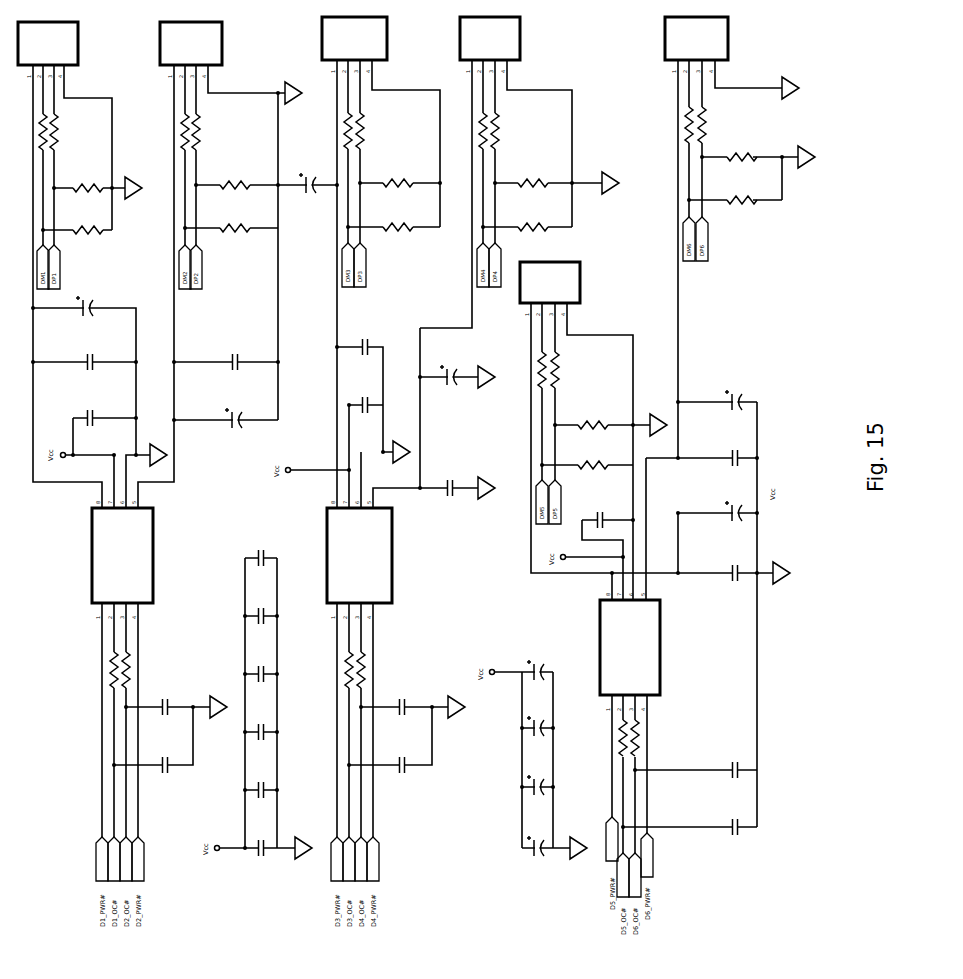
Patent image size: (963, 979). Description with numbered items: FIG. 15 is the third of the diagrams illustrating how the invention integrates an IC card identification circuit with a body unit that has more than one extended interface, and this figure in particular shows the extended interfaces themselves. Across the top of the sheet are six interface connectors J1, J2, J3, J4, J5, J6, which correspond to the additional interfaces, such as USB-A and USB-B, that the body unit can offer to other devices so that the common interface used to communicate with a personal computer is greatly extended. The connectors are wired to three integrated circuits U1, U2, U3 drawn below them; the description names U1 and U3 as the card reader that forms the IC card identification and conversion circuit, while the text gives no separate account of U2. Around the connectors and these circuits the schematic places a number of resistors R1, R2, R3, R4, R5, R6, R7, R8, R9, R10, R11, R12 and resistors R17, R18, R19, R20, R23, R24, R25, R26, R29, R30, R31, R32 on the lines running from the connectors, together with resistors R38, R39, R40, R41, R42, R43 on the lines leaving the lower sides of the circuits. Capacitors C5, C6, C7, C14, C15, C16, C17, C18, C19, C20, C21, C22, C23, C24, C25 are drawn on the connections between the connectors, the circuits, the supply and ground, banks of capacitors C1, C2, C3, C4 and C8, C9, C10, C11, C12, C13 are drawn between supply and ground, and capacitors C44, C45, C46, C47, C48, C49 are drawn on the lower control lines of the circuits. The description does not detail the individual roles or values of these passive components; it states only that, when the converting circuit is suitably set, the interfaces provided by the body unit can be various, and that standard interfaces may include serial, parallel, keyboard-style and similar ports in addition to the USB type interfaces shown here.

The USB-A connector J1 is at (51, 43).
The USB-B connector J2 is at (193, 43).
The USB-A connector J3 is at (354, 39).
The USB-A connector J4 is at (492, 39).
The USB-A connector J5 is at (552, 283).
The USB-A connector J6 is at (695, 39).
The card reader U1 is at (113, 556).
The MIC2526-2BM power switch U2 is at (350, 556).
The card reader U3 is at (620, 648).
The resistor R1 15K R1 is at (88, 222).
The resistor R2 15K R2 is at (88, 179).
The resistor R3 15K R3 is at (235, 220).
The resistor R4 15K R4 is at (235, 177).
The resistor R5 15K R5 is at (398, 218).
The resistor R6 15K R6 is at (398, 175).
The resistor R7 15K R7 is at (593, 457).
The resistor R8 15K R8 is at (593, 417).
The resistor R9 15K R9 is at (742, 214).
The resistor R10 15K R10 is at (742, 171).
The resistor R11 15K R11 is at (533, 217).
The resistor R12 15K R12 is at (533, 173).
The resistor R17 27 R17 is at (28, 132).
The resistor R18 27 R18 is at (467, 131).
The resistor R19 27 R19 is at (69, 132).
The resistor R20 27 R20 is at (509, 131).
The resistor R23 27 R23 is at (169, 132).
The resistor R24 27 R24 is at (528, 370).
The resistor R25 27 R25 is at (210, 132).
The resistor R26 27 R26 is at (568, 370).
The resistor R29 27 R29 is at (331, 131).
The resistor R30 27 R30 is at (674, 125).
The resistor R31 27 R31 is at (374, 131).
The resistor R32 27 R32 is at (715, 125).
The resistor R38 1K R38 is at (99, 670).
The resistor R39 1K R39 is at (142, 670).
The resistor R40 1K R40 is at (334, 670).
The resistor R41 1K R41 is at (377, 670).
The resistor R42 1K R42 is at (609, 738).
The resistor R43 1K R43 is at (653, 738).
The capacitor C1 10uF C1 is at (537, 837).
The capacitor C2 10uF C2 is at (537, 776).
The capacitor C3 10uF C3 is at (537, 717).
The capacitor C4 10uF C4 is at (537, 661).
The capacitor C5 120uF C5 is at (89, 296).
The capacitor C6 0.1uF C6 is at (95, 406).
The capacitor C7 0.1uF C7 is at (95, 350).
The capacitor C8 0.1uF C8 is at (262, 837).
The capacitor C9 0.1uF C9 is at (262, 779).
The capacitor C10 0.1uF C10 is at (262, 721).
The capacitor C11 0.1uF C11 is at (262, 663).
The capacitor C12 0.1uF C12 is at (262, 605).
The capacitor C13 0.1uF C13 is at (262, 547).
The capacitor C14 120uF C14 is at (236, 407).
The capacitor C15 0.1uF C15 is at (239, 350).
The capacitor C16 0.1uF C16 is at (369, 394).
The capacitor C17 0.1uF C17 is at (369, 335).
The capacitor C18 120uF C18 is at (306, 205).
The capacitor C19 0.1uF C19 is at (601, 509).
The capacitor C20 0.1uF C20 is at (454, 477).
The capacitor C21 120uF C21 is at (451, 364).
The capacitor C22 120uF C22 is at (735, 501).
The capacitor C23 0.1uF C23 is at (736, 563).
The capacitor C24 0.1uF C24 is at (736, 448).
The capacitor C25 120uF C25 is at (735, 389).
The capacitor C44 0.1uF C44 is at (170, 781).
The capacitor C45 0.1uF C45 is at (170, 724).
The capacitor C46 0.1uF C46 is at (409, 781).
The capacitor C47 0.1uF C47 is at (409, 724).
The capacitor C48 0.1uF C48 is at (737, 816).
The capacitor C49 0.1uF C49 is at (737, 759).